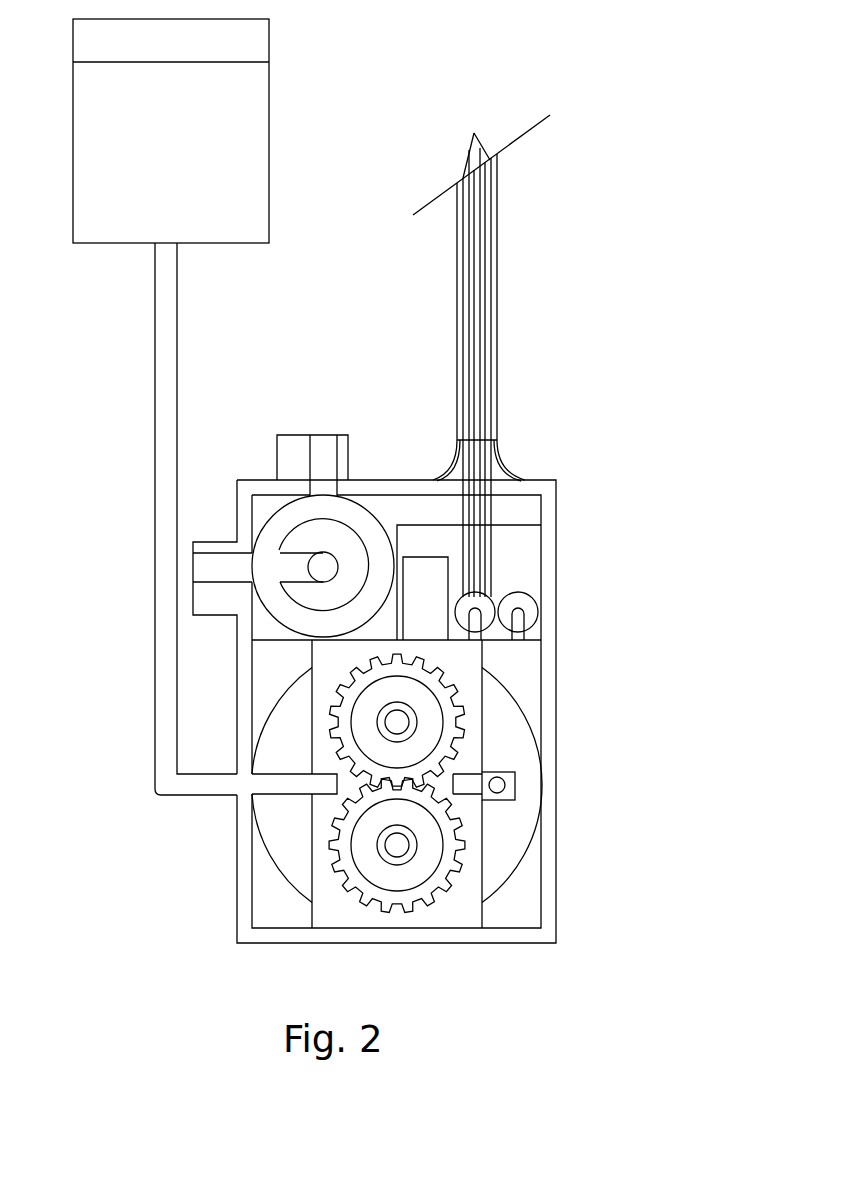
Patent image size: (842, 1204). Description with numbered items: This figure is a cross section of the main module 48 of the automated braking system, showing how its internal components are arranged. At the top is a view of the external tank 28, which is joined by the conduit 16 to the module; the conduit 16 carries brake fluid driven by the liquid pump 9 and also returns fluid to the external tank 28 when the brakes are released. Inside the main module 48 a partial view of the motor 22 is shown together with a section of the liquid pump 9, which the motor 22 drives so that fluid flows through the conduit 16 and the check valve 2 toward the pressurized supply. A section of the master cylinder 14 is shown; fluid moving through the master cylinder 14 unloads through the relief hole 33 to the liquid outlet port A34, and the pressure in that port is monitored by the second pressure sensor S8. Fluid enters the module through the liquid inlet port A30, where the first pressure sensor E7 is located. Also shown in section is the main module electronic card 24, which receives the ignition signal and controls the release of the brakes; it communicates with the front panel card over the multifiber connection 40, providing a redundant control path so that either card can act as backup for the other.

The external tank 28 is at (276, 144).
The conduit 16 is at (153, 313).
The main module 48 is at (557, 540).
The first pressure sensor E7 is at (278, 452).
The liquid inlet port A30 is at (325, 437).
The second pressure sensor S8 is at (212, 607).
The liquid outlet port A34 is at (202, 574).
The master cylinder 14 is at (296, 630).
The relief hole 33 is at (291, 570).
The multifiber connection 40 is at (498, 326).
The main module electronic card 24 is at (522, 592).
The liquid pump 9 is at (452, 708).
The motor 22 is at (514, 735).
The check valve 2 is at (505, 785).